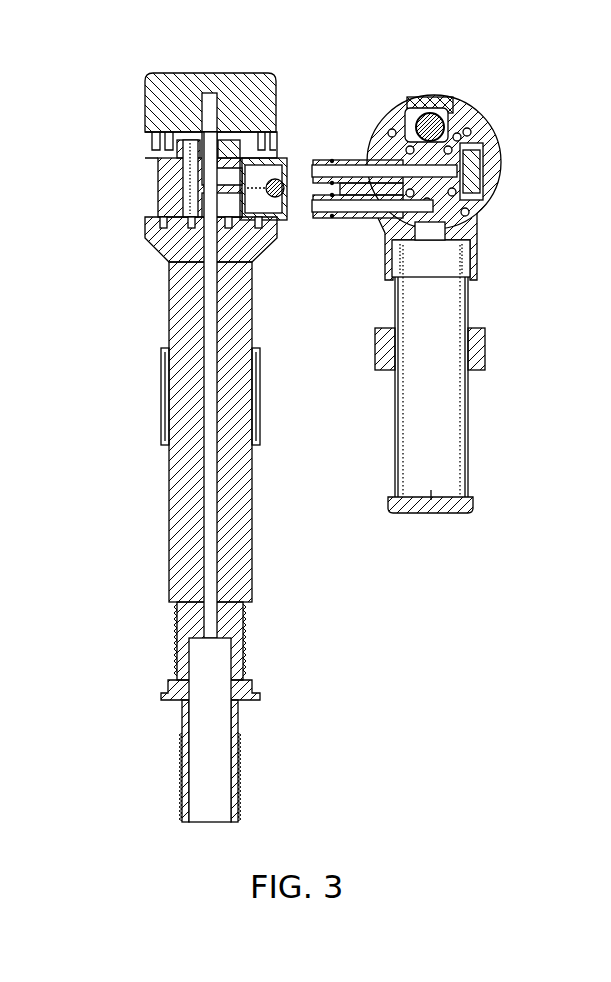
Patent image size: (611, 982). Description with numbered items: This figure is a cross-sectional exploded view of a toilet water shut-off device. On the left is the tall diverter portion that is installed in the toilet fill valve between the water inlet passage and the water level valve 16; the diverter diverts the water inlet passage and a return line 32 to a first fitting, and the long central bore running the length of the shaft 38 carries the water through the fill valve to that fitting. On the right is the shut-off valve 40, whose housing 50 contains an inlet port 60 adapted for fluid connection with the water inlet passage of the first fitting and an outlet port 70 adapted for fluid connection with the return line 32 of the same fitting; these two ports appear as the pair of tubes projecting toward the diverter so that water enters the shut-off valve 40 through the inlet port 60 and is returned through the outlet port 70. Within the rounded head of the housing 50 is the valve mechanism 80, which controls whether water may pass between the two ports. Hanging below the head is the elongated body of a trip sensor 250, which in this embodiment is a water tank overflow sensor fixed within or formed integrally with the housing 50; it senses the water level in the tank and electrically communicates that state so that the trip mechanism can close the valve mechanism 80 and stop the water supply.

The water level valve 16 is at (210, 128).
The return line 32 is at (232, 172).
The shaft / stem 38 is at (230, 205).
The shut-off valve 40 is at (422, 171).
The housing 50 is at (480, 122).
The inlet port 60 is at (352, 205).
The outlet port 70 is at (324, 170).
The valve mechanism 80 is at (410, 127).
The trip sensor 250 is at (477, 301).